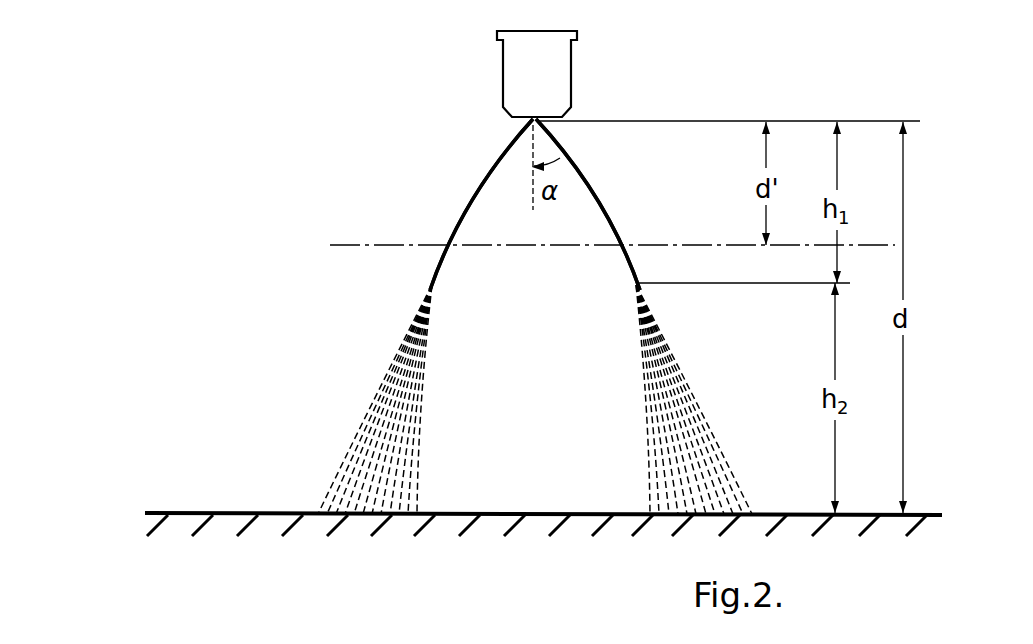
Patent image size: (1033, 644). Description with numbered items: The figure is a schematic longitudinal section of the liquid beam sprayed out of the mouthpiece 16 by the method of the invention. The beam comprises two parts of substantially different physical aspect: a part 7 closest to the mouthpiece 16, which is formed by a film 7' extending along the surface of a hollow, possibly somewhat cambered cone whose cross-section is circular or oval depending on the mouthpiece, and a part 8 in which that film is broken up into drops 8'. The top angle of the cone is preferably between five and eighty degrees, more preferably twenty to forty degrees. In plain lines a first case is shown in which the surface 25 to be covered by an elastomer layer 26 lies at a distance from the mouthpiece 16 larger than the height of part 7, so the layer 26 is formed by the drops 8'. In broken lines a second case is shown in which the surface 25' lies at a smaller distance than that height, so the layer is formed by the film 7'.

The mouthpiece 16 is at (577, 77).
The part of the beam closest to the mouthpiece 7 is at (488, 204).
The film 7' is at (527, 202).
The part of the beam broken up into drops 8 is at (495, 399).
The drops 8' is at (490, 399).
The surface to be covered 25 is at (537, 563).
The surface in the second case 25' is at (572, 213).
The elastomer layer 26 is at (858, 512).